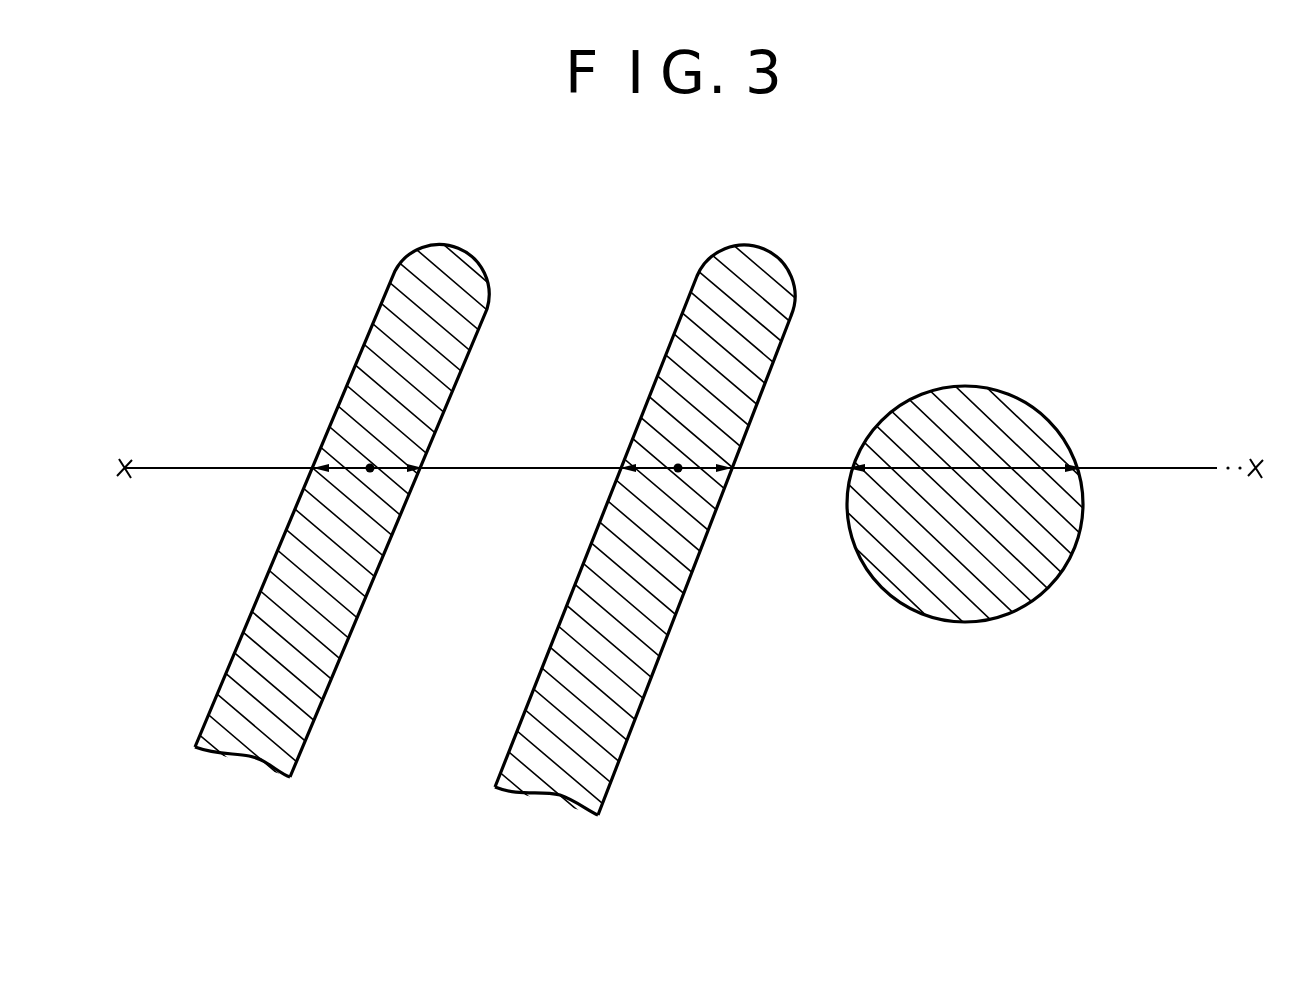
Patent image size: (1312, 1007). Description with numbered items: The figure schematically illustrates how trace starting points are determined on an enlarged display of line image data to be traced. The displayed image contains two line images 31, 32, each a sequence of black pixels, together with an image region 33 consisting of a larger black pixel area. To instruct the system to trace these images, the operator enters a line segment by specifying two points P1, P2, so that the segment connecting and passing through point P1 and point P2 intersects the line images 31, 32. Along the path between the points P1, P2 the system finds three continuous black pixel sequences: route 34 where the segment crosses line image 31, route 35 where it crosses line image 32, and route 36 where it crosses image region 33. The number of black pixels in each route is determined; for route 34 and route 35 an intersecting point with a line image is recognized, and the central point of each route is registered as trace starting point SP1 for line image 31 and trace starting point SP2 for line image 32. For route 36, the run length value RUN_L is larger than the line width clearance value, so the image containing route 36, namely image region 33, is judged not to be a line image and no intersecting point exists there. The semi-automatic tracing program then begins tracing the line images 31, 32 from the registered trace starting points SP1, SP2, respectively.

The line image 31 is at (476, 248).
The line image 32 is at (775, 252).
The image region 33 is at (991, 386).
The route 34 is at (343, 470).
The route 35 is at (660, 470).
The route 36 is at (1022, 468).
The trace starting point SP1 is at (372, 466).
The trace starting point SP2 is at (677, 470).
The point P1 is at (125, 462).
The point P2 is at (1257, 462).